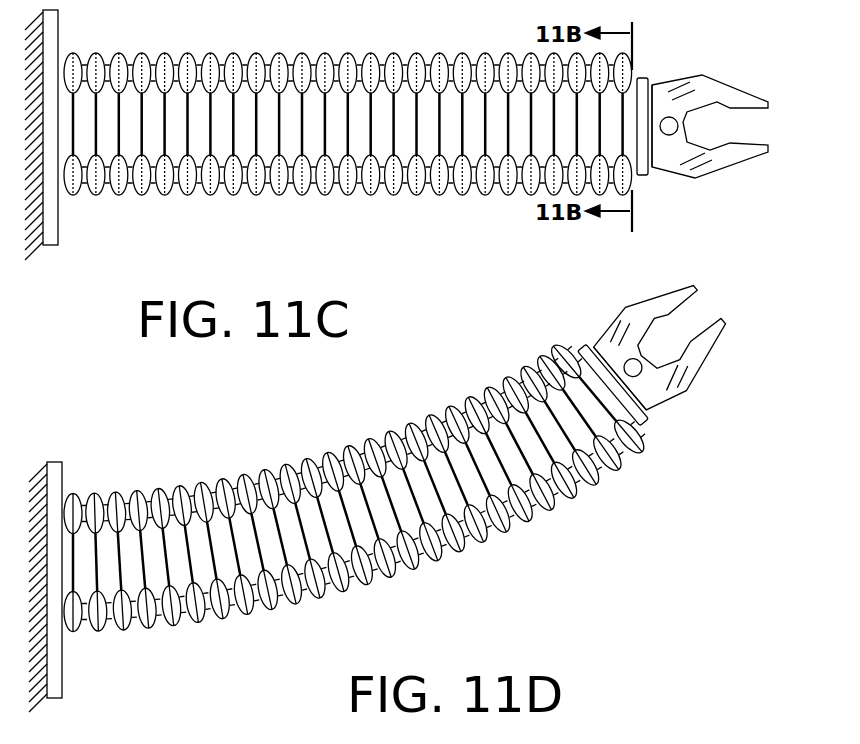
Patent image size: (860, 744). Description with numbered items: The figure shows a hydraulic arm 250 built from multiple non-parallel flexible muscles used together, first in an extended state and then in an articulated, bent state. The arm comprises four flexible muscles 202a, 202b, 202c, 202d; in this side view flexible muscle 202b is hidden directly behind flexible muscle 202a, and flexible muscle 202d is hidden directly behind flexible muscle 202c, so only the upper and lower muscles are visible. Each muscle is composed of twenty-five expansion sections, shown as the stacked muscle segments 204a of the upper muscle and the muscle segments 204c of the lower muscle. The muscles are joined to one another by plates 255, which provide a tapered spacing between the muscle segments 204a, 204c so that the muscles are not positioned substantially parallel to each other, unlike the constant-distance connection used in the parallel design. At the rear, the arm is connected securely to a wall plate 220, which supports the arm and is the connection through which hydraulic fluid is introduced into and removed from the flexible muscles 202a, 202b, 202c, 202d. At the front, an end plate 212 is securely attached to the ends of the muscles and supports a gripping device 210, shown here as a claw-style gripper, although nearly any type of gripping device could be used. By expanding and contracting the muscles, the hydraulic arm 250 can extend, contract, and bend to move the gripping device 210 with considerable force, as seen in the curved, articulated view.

In FIG. 11C, the flexible muscle 202a is at (348, 52).
In FIG. 11D, the flexible muscle 202a is at (327, 435).
In FIG. 11D, the flexible muscle 202b is at (345, 447).
In FIG. 11C, the flexible muscle 202c is at (348, 211).
In FIG. 11D, the flexible muscle 202c is at (358, 548).
In FIG. 11D, the flexible muscle 202d is at (340, 608).
In FIG. 11C, the muscle segments 204a is at (262, 22).
In FIG. 11C, the muscle segments 204c is at (440, 188).
In FIG. 11C, the gripping device 210 is at (730, 83).
In FIG. 11D, the gripping device 210 is at (720, 322).
In FIG. 11C, the end plate 212 is at (645, 175).
In FIG. 11D, the end plate 212 is at (645, 423).
In FIG. 11C, the wall plate 220 is at (58, 43).
In FIG. 11D, the wall plate 220 is at (63, 482).
In FIG. 11C, the hydraulic arm 250 is at (429, 163).
In FIG. 11D, the hydraulic arm 250 is at (444, 475).
In FIG. 11C, the plates 255 is at (305, 120).
In FIG. 11D, the plates 255 is at (590, 455).